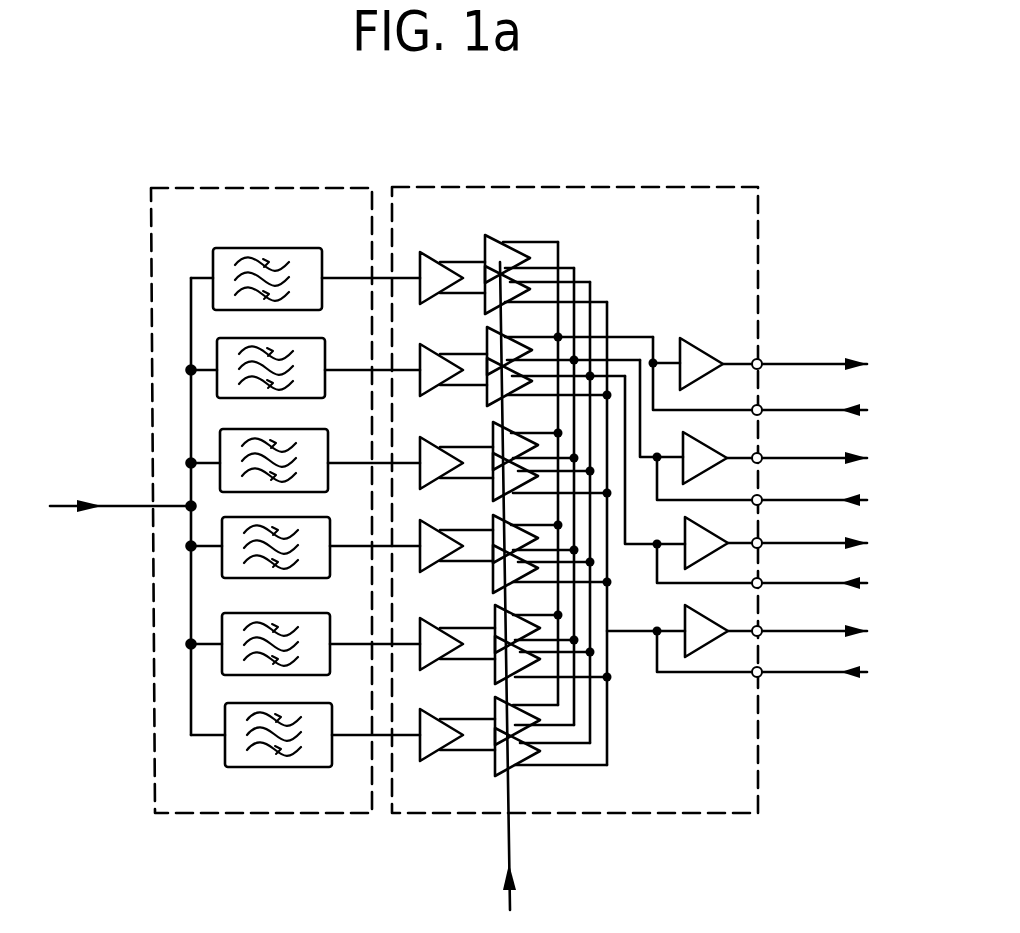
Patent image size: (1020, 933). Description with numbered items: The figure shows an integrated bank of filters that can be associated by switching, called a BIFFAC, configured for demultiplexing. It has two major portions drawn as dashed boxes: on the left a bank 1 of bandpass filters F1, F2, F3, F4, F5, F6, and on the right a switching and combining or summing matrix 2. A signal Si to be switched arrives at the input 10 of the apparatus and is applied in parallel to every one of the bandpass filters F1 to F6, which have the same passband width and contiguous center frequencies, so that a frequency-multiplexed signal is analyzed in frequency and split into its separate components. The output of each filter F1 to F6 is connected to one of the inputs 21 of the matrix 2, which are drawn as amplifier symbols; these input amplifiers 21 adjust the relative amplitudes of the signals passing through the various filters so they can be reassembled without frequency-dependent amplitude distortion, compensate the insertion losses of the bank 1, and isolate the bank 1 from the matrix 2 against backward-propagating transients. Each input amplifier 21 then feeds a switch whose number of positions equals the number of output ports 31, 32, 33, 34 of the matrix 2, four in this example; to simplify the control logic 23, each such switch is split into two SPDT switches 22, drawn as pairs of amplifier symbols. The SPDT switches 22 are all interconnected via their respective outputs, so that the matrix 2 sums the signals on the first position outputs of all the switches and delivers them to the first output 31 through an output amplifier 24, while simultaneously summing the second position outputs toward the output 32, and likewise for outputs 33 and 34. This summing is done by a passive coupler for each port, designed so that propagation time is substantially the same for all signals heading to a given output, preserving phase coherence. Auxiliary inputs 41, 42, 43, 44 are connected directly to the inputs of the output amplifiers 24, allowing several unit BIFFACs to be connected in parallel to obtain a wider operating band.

The bank of bandpass filters 1 is at (265, 188).
The switching and combining matrix 2 is at (617, 190).
The input 10 is at (117, 505).
The bandpass filter F1 is at (314, 262).
The bandpass filter F2 is at (320, 352).
The bandpass filter F3 is at (323, 444).
The bandpass filter F4 is at (323, 537).
The bandpass filter F5 is at (326, 628).
The bandpass filter F6 is at (327, 724).
The input amplifier 21 is at (431, 262).
The SPDT switch 22 is at (492, 235).
The control logic 23 is at (511, 856).
The output amplifier 24 is at (702, 348).
The output port 31 is at (762, 362).
The output port 32 is at (762, 458).
The output port 33 is at (762, 543).
The output port 34 is at (762, 631).
The auxiliary input 41 is at (762, 410).
The auxiliary input 42 is at (762, 500).
The auxiliary input 43 is at (762, 583).
The auxiliary input 44 is at (762, 672).